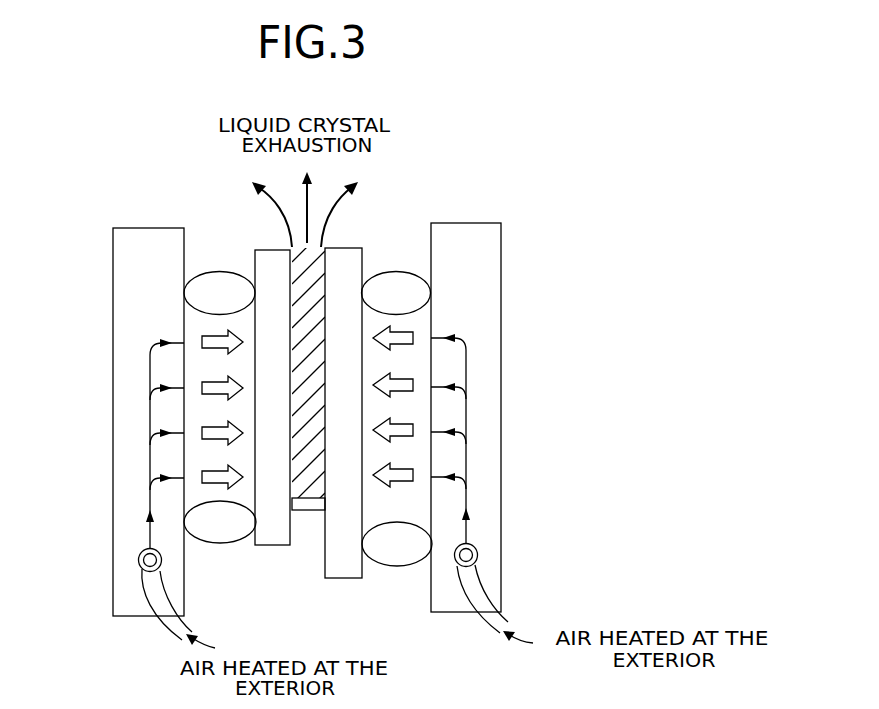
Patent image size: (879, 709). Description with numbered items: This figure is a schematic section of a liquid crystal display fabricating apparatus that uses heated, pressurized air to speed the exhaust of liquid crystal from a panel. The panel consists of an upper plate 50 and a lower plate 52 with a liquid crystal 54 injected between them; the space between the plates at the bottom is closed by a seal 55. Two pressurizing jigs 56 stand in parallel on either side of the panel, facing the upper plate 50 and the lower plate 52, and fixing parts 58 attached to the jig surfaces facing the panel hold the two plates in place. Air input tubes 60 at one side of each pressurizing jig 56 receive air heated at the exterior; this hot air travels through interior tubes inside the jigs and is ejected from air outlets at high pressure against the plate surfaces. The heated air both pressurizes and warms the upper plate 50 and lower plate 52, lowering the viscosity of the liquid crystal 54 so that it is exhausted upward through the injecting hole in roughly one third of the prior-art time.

The upper plate 50 is at (268, 257).
The lower plate 52 is at (347, 255).
The liquid crystal 54 is at (293, 316).
The sealant 55 is at (308, 512).
The pressurizing jig 56 is at (112, 272).
The fixing part 58 is at (210, 272).
The air input tube 60 is at (155, 603).